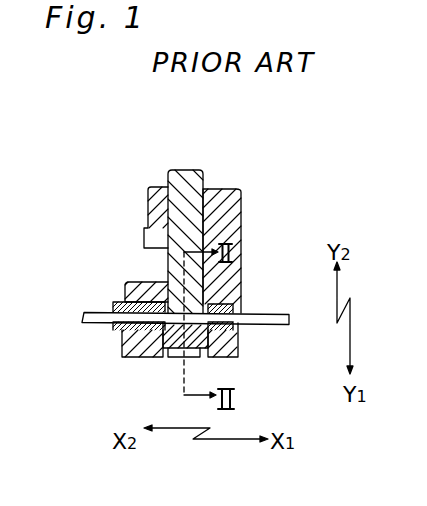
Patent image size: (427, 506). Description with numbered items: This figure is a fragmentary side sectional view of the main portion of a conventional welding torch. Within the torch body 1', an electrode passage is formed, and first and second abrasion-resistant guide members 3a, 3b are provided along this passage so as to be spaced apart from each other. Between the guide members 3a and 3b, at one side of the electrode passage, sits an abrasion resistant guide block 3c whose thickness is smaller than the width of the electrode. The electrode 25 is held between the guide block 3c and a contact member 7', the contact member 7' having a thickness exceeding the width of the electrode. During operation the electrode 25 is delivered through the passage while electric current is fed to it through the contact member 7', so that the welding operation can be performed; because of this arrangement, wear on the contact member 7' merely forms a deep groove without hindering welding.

The torch body 1' is at (166, 264).
The contact member 7' is at (233, 234).
The first abrasion-resistant guide member 3a is at (116, 307).
The second abrasion-resistant guide member 3b is at (212, 305).
The abrasion resistant guide block 3c is at (184, 350).
The electrode 25 is at (273, 325).